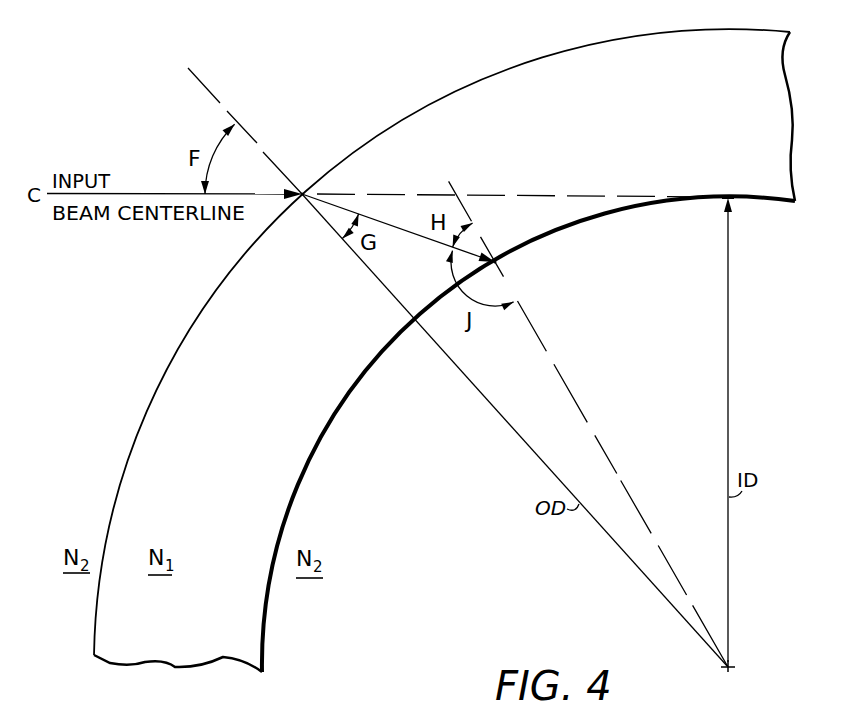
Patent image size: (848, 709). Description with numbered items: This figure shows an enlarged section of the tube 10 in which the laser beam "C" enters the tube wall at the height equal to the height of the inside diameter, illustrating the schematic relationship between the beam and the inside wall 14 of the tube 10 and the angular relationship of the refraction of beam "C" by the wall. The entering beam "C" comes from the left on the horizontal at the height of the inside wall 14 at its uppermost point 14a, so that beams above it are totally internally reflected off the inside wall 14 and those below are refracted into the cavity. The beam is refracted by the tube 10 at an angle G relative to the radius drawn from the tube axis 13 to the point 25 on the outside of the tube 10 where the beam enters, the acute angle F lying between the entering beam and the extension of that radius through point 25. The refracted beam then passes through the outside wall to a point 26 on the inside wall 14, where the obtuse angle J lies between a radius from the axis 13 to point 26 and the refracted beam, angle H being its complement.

The tube 10 is at (530, 60).
The tube axis 13 is at (735, 661).
The inside wall 14 is at (636, 213).
The uppermost point 14a is at (735, 201).
The point on the outside of the tube 25 is at (301, 199).
The point on the inside wall 26 is at (500, 263).